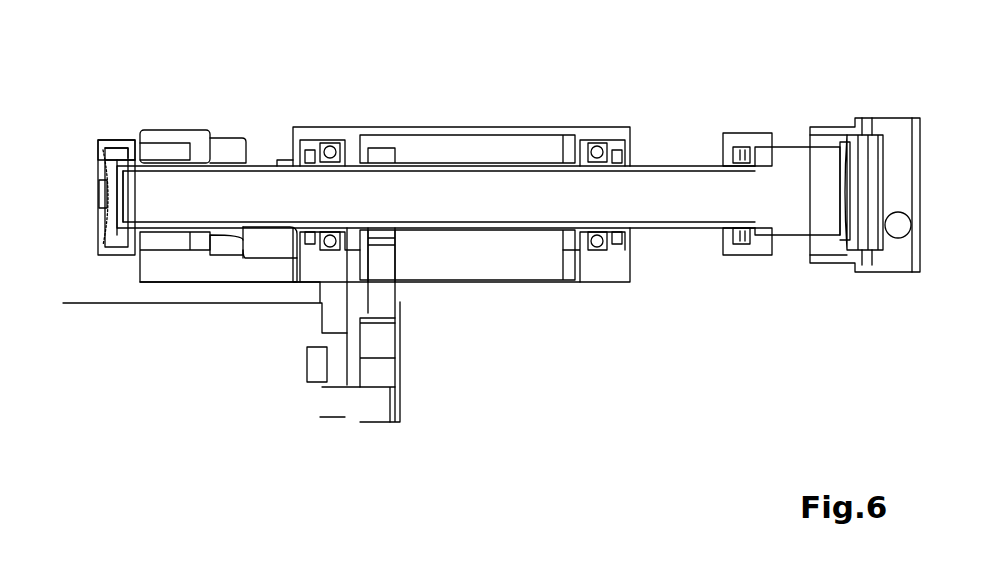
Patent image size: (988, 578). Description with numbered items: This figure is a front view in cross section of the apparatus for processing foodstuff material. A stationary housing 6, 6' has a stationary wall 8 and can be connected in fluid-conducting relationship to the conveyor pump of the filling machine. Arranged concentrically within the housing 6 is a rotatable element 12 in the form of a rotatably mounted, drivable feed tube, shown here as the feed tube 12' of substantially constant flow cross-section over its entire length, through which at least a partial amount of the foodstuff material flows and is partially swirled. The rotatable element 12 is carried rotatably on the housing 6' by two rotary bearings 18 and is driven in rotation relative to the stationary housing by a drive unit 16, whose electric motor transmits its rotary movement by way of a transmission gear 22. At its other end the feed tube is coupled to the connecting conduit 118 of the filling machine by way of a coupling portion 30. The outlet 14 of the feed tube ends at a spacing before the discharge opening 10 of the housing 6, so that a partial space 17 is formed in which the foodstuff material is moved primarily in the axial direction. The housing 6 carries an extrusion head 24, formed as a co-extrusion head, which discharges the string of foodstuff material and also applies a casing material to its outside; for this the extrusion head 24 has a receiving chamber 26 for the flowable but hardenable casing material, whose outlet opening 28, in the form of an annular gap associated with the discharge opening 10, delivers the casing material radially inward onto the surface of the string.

The housing 6 is at (218, 158).
The housing 6' is at (467, 158).
The stationary wall 8 is at (198, 163).
The discharge opening 10 is at (100, 206).
The rotatable element 12 is at (446, 161).
The shaft 12' is at (436, 137).
The outlet 14 is at (123, 208).
The drive unit 16 is at (316, 471).
The partial space 17 is at (120, 229).
The rotary bearings 18 is at (601, 150).
The transmission gear 22 is at (406, 338).
The extrusion head 24 is at (112, 153).
The receiving chamber 26 is at (117, 158).
The outlet opening 28 is at (105, 178).
The coupling portion 30 is at (752, 246).
The connecting conduit 118 is at (873, 118).